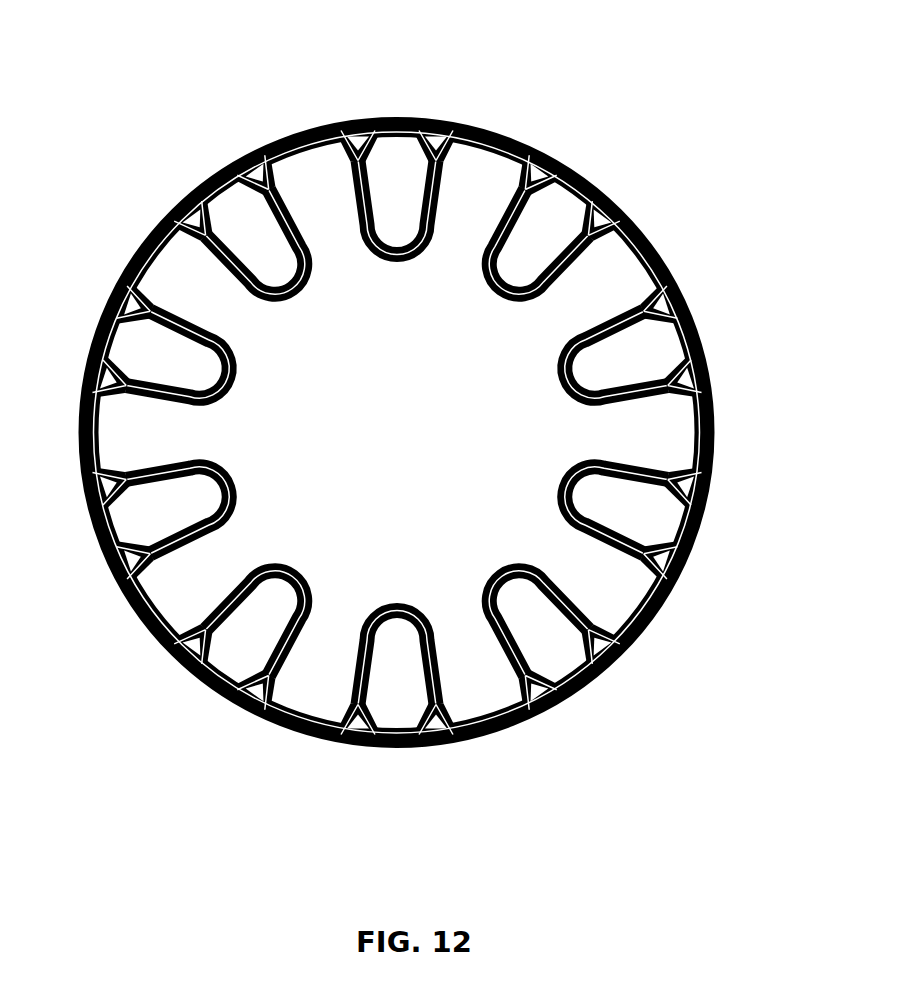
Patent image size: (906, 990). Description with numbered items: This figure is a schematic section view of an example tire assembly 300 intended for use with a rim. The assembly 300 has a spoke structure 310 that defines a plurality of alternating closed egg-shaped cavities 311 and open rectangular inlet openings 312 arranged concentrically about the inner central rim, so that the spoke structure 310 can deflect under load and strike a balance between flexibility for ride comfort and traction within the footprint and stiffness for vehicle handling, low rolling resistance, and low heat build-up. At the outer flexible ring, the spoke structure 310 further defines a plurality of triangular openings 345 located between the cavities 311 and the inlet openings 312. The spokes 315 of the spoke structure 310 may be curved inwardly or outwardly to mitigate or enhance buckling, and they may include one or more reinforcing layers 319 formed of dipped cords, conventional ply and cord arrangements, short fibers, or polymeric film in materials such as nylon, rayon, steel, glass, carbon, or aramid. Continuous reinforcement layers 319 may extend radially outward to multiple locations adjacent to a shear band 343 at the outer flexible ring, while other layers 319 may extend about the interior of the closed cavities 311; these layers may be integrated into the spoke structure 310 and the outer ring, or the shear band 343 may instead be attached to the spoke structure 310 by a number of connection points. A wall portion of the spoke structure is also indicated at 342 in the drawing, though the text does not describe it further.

The tire assembly 300 is at (405, 403).
The spoke structure 310 is at (240, 355).
The closed egg-shaped cavities 311 is at (407, 426).
The open rectangular inlet openings 312 is at (300, 160).
The spokes 315 is at (566, 377).
The reinforcing layers 319 is at (388, 603).
The wall 342 is at (153, 272).
The shear band 343 is at (222, 165).
The triangular openings 345 is at (262, 163).